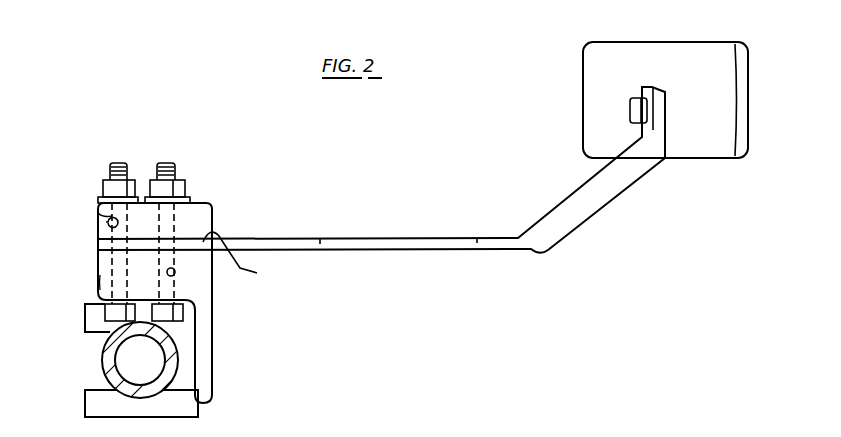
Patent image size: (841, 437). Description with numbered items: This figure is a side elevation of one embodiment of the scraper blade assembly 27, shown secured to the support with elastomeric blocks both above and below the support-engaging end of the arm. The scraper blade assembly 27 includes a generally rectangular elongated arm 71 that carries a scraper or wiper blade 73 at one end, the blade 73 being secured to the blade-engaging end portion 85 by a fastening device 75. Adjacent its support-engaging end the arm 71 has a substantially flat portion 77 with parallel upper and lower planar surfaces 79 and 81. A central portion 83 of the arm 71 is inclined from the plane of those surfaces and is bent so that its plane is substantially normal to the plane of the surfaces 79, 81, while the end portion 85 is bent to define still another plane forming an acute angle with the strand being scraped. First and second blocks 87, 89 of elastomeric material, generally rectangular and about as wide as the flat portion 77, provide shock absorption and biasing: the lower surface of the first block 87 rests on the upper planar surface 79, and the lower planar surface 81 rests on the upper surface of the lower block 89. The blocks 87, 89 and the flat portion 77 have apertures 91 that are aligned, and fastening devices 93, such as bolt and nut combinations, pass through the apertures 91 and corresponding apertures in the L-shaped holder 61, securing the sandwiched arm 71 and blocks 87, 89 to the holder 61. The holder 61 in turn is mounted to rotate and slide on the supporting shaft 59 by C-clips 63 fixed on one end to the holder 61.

The scraper blade assembly 27 is at (423, 177).
The supporting shaft 59 is at (102, 360).
The holder 61 is at (214, 347).
The C-clips 63 is at (190, 407).
The elongated arm 71 is at (348, 228).
The scraper blade 73 is at (698, 83).
The fastening device 75 is at (630, 110).
The substantially flat portion 77 is at (425, 237).
The upper planar surface 79 is at (242, 259).
The lower planar surface 81 is at (102, 257).
The central portion 83 is at (622, 197).
The blade-engaging end portion 85 is at (662, 117).
The first elastomeric block 87 is at (103, 225).
The second elastomeric block 89 is at (100, 275).
The apertures 91 is at (97, 212).
The fastening devices 93 is at (103, 187).